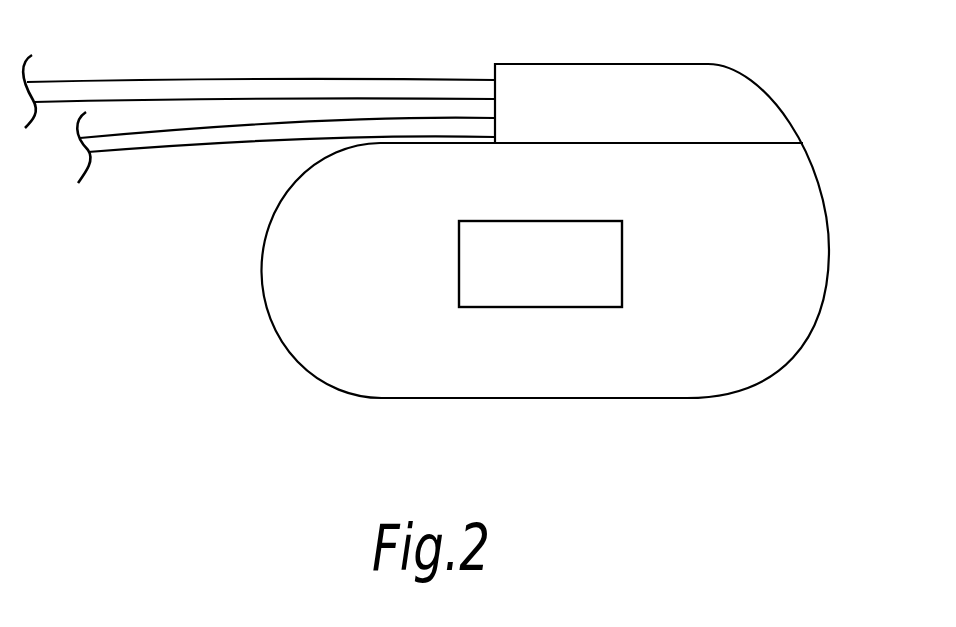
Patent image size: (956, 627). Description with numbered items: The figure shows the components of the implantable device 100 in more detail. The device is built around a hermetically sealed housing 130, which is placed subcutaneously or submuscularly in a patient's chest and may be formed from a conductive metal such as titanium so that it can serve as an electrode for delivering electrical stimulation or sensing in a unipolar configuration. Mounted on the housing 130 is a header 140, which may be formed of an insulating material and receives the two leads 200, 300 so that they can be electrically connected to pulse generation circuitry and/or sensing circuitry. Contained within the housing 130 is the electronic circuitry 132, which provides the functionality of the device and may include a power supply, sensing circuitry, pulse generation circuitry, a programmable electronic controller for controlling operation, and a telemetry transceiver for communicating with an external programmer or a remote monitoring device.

The implantable device 100 is at (593, 232).
The housing 130 is at (800, 348).
The header 140 is at (780, 109).
The electronic circuitry 132 is at (622, 232).
The lead 200 is at (117, 80).
The lead 300 is at (148, 148).